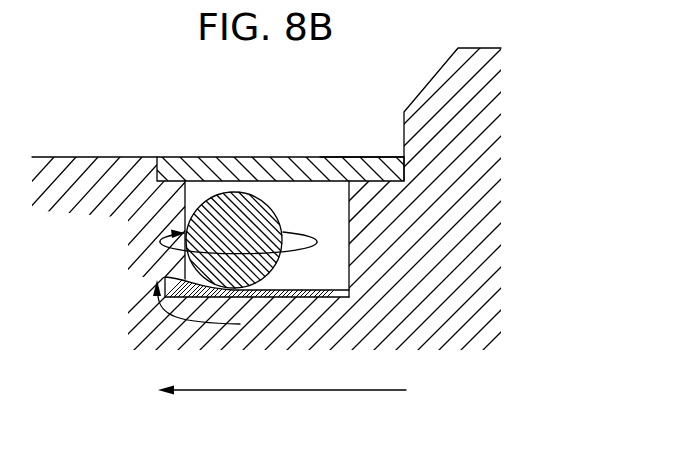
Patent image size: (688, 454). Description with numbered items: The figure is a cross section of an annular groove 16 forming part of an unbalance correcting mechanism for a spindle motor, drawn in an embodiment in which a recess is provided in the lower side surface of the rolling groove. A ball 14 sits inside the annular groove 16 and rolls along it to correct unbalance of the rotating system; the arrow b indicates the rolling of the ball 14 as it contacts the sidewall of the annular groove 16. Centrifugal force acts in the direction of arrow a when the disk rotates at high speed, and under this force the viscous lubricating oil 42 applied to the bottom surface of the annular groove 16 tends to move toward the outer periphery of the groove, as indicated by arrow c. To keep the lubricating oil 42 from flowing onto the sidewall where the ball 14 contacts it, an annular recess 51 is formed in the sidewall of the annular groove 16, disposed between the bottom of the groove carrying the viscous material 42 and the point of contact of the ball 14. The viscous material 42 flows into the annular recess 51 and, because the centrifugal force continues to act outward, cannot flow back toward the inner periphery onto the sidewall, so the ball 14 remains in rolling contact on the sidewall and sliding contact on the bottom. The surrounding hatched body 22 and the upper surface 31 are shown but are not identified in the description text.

The ball 14 is at (231, 200).
The annular groove 16 is at (290, 188).
The base body 22 is at (492, 222).
The upper surface of plate 31 is at (344, 157).
The lubricating oil (viscous material) 42 is at (293, 289).
The annular recess 51 is at (165, 277).
The direction of centrifugal force a is at (282, 405).
The ball rolling direction b is at (299, 243).
The flow direction of lubricating oil c is at (181, 322).